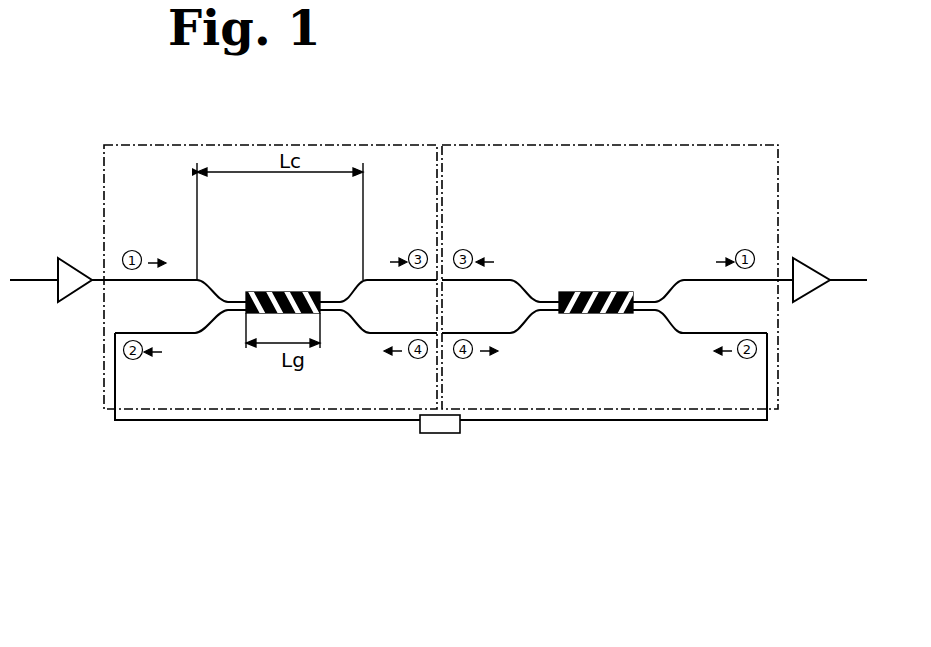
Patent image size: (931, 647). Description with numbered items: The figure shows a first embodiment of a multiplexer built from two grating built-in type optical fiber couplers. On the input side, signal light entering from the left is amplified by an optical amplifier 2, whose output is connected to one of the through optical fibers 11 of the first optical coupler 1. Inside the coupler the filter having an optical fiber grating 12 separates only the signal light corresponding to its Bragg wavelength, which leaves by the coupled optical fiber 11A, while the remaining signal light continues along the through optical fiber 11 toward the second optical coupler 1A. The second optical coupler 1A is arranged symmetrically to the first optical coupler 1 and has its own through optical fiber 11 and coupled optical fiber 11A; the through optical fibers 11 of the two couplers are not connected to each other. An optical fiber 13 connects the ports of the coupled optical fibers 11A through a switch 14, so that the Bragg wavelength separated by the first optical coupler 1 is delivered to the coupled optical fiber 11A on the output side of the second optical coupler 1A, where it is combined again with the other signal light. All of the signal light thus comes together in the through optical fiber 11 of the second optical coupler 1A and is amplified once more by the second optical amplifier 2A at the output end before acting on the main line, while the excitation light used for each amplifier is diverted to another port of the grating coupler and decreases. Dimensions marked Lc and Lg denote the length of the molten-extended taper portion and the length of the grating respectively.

The first optical coupler 1 is at (363, 145).
The second optical coupler 1A is at (587, 145).
The optical amplifier 2 is at (76, 262).
The second optical amplifier 2A is at (818, 260).
The through optical fiber 11 is at (182, 280).
The coupled optical fiber 11A is at (167, 333).
The filter having optical fiber grating 12 is at (270, 292).
The optical fiber 13 is at (305, 420).
The switch 14 is at (445, 433).